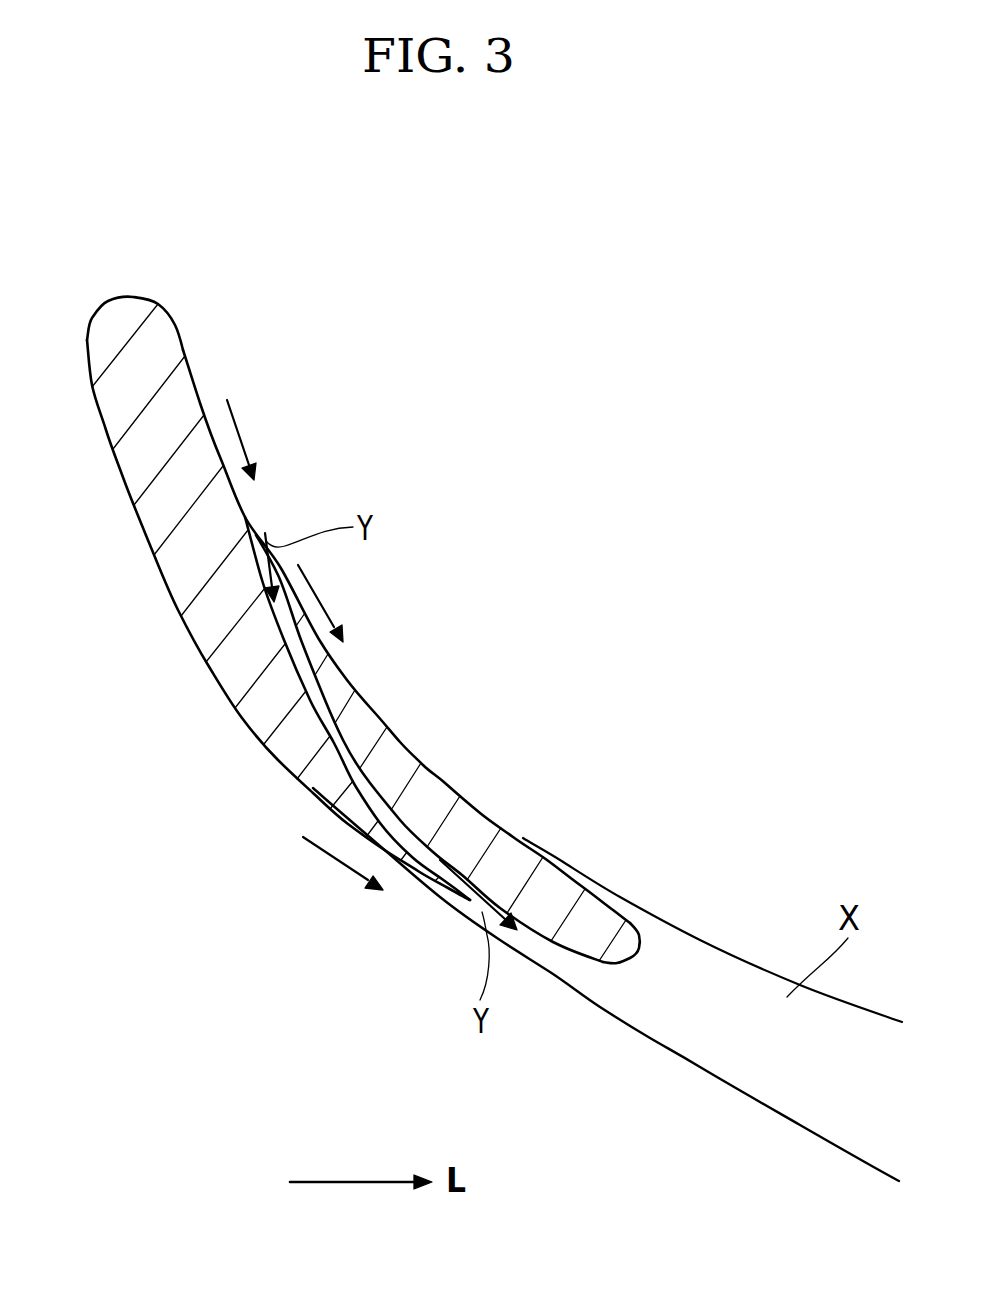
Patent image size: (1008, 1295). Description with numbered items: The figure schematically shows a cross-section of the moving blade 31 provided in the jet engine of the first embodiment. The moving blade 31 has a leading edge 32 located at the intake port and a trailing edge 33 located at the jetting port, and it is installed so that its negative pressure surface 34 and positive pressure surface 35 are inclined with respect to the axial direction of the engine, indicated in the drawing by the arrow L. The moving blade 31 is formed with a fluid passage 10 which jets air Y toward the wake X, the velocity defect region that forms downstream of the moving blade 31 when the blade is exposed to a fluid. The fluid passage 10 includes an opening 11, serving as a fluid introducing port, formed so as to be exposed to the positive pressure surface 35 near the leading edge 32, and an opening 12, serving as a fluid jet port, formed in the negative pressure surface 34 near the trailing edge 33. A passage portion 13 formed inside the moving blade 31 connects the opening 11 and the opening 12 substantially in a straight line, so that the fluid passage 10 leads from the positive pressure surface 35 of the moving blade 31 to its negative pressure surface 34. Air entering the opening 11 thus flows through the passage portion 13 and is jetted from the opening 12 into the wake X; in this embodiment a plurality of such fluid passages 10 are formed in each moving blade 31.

The fluid passage 10 is at (428, 725).
The opening (fluid introducing port) 11 is at (253, 528).
The opening (fluid jet port) 12 is at (465, 880).
The passage portion 13 is at (312, 708).
The moving blade 31 is at (410, 602).
The leading edge 32 is at (117, 297).
The trailing edge 33 is at (642, 952).
The negative pressure surface 34 is at (186, 624).
The positive pressure surface 35 is at (367, 699).